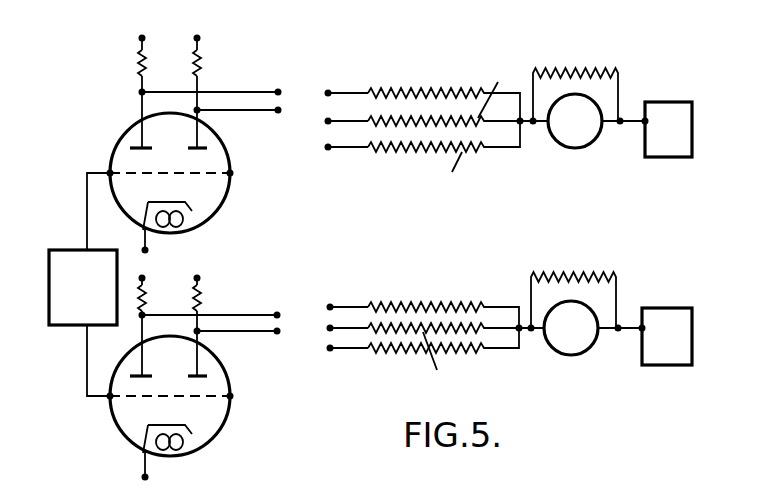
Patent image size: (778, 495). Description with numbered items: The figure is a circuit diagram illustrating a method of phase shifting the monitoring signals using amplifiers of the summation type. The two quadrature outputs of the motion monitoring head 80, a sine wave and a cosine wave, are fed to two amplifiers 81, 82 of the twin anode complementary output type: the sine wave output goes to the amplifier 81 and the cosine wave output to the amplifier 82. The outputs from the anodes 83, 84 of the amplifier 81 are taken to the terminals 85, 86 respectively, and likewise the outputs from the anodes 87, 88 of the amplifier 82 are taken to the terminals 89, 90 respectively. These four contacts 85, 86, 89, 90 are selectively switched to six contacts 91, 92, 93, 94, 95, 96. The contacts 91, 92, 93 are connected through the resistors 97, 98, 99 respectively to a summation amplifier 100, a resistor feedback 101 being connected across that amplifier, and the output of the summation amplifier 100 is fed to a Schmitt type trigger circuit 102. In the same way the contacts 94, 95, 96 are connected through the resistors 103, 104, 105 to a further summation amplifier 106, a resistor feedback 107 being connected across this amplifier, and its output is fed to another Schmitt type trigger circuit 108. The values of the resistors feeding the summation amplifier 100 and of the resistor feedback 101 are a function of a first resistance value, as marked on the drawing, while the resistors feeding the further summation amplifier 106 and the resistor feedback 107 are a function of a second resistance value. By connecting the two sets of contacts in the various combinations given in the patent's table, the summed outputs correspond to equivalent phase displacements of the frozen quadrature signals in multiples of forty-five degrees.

The motion monitoring head 80 is at (62, 250).
The amplifier 81 is at (122, 136).
The amplifier 82 is at (222, 426).
The anode 83 is at (147, 148).
The anode 84 is at (201, 147).
The terminal 85 is at (291, 80).
The terminal 86 is at (278, 113).
The anode 87 is at (146, 373).
The anode 88 is at (200, 375).
The terminal 89 is at (277, 315).
The terminal 90 is at (277, 335).
The contact 91 is at (328, 91).
The contact 92 is at (328, 120).
The contact 93 is at (327, 149).
The contact 94 is at (330, 305).
The contact 95 is at (330, 327).
The contact 96 is at (330, 350).
The resistor 97 is at (385, 93).
The resistor 98 is at (373, 122).
The resistor 99 is at (397, 153).
The summation amplifier 100 is at (570, 156).
The resistor feedback 101 is at (582, 73).
The Schmitt type trigger circuit 102 is at (667, 157).
The resistor 103 is at (390, 305).
The resistor 104 is at (373, 329).
The resistor 105 is at (398, 355).
The further summation amplifier 106 is at (568, 356).
The resistor feedback 107 is at (533, 275).
The Schmitt type trigger circuit 108 is at (663, 365).